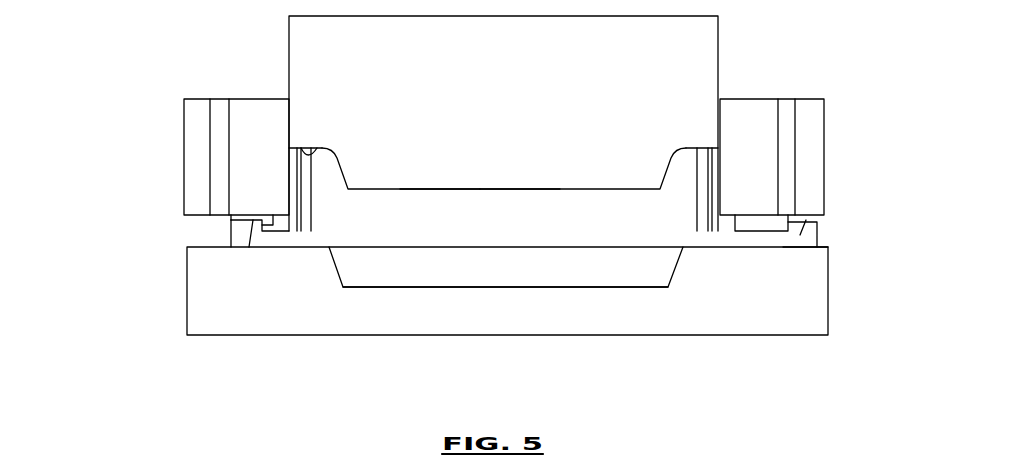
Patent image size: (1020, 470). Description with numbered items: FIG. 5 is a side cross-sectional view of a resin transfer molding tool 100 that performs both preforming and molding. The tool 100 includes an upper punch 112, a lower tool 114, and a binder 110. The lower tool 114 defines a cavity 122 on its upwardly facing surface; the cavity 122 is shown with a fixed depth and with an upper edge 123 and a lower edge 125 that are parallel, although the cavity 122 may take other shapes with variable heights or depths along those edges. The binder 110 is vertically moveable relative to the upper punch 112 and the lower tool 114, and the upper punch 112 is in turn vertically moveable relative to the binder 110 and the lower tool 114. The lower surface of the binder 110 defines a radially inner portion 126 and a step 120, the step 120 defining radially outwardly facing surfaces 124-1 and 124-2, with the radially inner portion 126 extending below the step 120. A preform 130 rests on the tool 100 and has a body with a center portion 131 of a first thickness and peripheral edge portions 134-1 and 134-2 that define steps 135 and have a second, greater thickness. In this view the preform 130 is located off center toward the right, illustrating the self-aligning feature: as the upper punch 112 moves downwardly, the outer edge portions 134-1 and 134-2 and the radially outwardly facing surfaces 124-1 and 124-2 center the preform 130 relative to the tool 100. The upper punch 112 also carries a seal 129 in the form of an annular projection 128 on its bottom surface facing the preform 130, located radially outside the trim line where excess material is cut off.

The tool 100 is at (89, 42).
The binder 110 is at (184, 112).
The upper punch 112 is at (288, 52).
The lower tool 114 is at (187, 283).
The step 120 is at (257, 215).
The cavity 122 is at (445, 289).
The upper edge 123 is at (785, 249).
The radially outwardly facing surface 124-1 is at (235, 215).
The radially outwardly facing surface 124-2 is at (735, 220).
The lower edge 125 is at (545, 289).
The radially inner portion 126 is at (284, 231).
The annular projection 128 is at (317, 150).
The seal 129 is at (305, 134).
The preform 130 is at (514, 236).
The center portion 131 is at (442, 236).
The peripheral edge portion 134-1 is at (248, 224).
The peripheral edge portion 134-2 is at (808, 227).
The step 135 is at (249, 230).